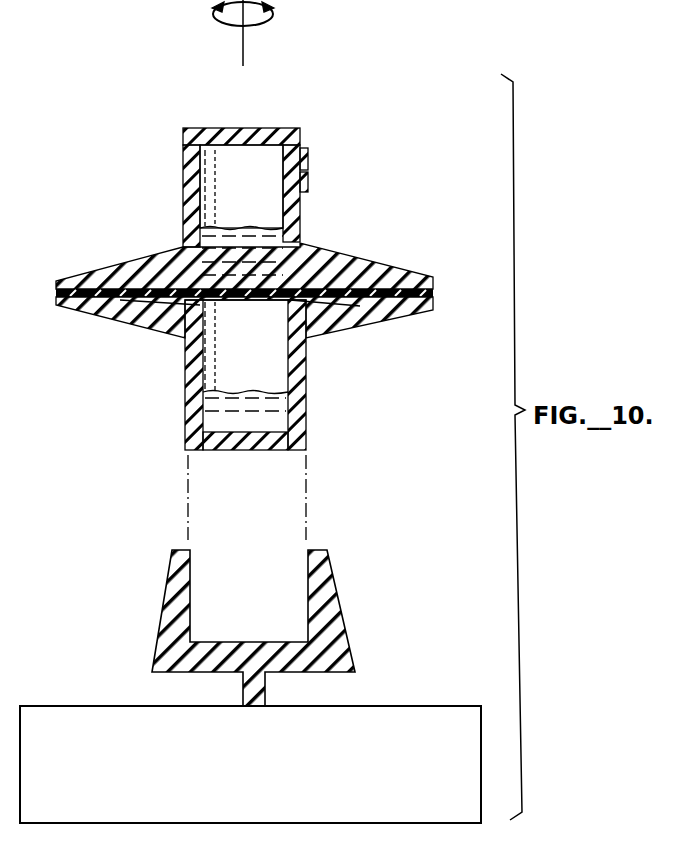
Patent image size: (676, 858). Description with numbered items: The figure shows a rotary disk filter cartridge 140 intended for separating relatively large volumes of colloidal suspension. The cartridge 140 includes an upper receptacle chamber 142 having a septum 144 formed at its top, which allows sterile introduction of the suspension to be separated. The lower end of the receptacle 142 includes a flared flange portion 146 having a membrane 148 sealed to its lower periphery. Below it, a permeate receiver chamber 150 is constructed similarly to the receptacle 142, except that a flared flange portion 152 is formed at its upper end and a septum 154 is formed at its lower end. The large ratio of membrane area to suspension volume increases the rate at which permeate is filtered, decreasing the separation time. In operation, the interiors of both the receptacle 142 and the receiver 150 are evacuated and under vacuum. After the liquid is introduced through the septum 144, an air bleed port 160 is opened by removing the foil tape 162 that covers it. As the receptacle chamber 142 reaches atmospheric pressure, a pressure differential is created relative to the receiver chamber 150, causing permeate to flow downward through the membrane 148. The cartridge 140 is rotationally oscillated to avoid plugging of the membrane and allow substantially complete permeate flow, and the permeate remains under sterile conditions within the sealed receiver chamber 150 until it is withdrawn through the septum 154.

The rotary disk filter cartridge 140 is at (342, 100).
The upper receptacle chamber 142 is at (303, 210).
The septum 144 is at (265, 128).
The flared flange portion 146 is at (386, 266).
The membrane 148 is at (226, 298).
The permeate receiver chamber 150 is at (300, 403).
The flared flange portion 152 is at (388, 316).
The septum 154 is at (232, 452).
The air bleed port 160 is at (306, 166).
The foil tape 162 is at (306, 181).